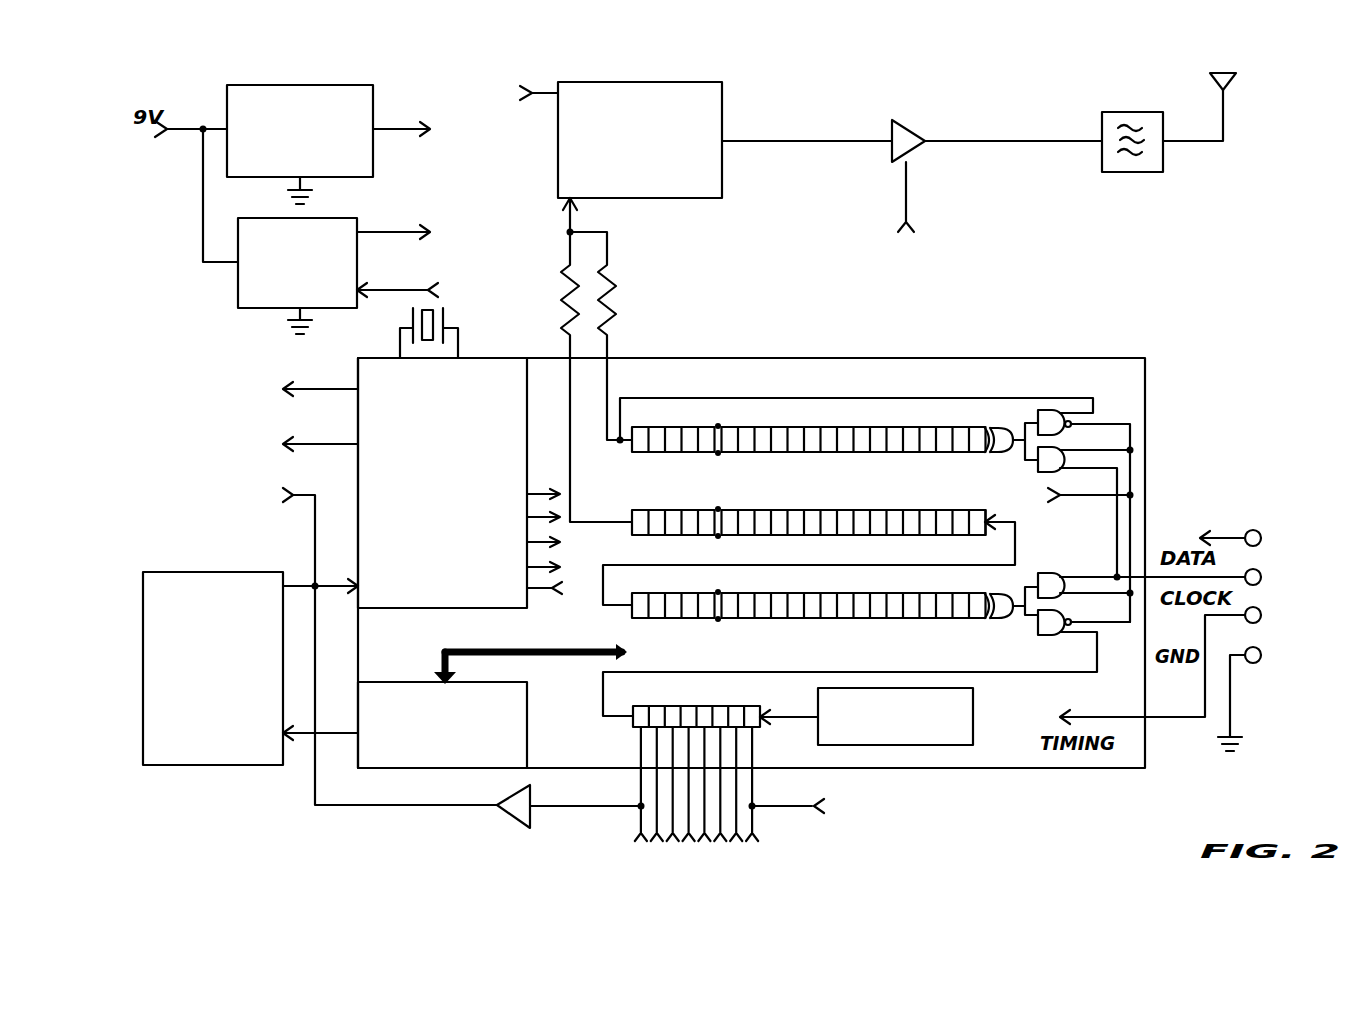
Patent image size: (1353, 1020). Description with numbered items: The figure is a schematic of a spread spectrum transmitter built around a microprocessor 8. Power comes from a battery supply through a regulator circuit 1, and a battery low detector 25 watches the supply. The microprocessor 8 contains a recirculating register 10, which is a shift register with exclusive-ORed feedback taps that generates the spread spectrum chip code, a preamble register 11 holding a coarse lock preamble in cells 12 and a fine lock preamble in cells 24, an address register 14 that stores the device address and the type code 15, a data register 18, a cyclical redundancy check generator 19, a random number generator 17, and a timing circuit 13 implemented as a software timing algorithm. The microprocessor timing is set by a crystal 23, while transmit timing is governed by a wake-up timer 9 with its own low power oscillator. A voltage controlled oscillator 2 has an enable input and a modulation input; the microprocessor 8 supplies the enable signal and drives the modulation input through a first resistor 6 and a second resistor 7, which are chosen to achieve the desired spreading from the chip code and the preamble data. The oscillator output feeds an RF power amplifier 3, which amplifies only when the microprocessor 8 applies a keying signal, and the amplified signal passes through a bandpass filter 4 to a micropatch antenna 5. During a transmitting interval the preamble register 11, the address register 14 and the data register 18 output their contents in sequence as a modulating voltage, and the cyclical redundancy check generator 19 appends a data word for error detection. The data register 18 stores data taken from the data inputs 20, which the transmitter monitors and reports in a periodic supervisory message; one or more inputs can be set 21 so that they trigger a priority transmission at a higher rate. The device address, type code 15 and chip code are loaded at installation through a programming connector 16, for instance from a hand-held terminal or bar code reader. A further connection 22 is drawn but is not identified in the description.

The regulator circuit 1 is at (228, 103).
The voltage controlled oscillator 2 is at (572, 82).
The RF power amplifier 3 is at (892, 118).
The bandpass filter 4 is at (1108, 112).
The antenna 5 is at (1213, 78).
The first resistor 6 is at (558, 287).
The second resistor 7 is at (610, 318).
The microprocessor 8 is at (1145, 358).
The wake-up timer 9 is at (184, 768).
The recirculating register 10 is at (718, 457).
The preamble register 11 is at (645, 536).
The coarse lock preamble cells 12 is at (915, 535).
The timing circuit 13 is at (487, 608).
The address register 14 is at (632, 618).
The type code 15 is at (962, 618).
The programming connector 16 is at (1265, 527).
The random number generator 17 is at (390, 770).
The data register 18 is at (636, 730).
The cyclical redundancy check generator 19 is at (818, 740).
The data inputs 20 is at (760, 826).
The priority setting 21 is at (505, 822).
The reset line 22 is at (350, 578).
The crystal 23 is at (411, 326).
The fine lock preamble cells 24 is at (978, 535).
The battery low detector 25 is at (240, 308).